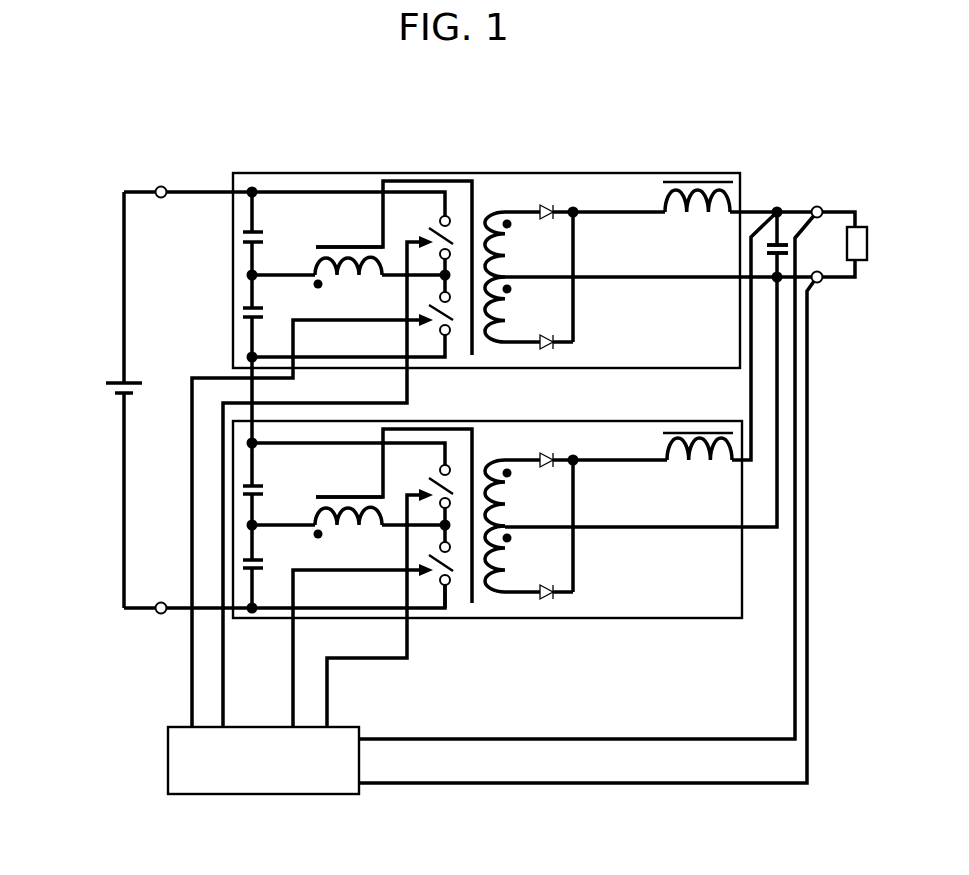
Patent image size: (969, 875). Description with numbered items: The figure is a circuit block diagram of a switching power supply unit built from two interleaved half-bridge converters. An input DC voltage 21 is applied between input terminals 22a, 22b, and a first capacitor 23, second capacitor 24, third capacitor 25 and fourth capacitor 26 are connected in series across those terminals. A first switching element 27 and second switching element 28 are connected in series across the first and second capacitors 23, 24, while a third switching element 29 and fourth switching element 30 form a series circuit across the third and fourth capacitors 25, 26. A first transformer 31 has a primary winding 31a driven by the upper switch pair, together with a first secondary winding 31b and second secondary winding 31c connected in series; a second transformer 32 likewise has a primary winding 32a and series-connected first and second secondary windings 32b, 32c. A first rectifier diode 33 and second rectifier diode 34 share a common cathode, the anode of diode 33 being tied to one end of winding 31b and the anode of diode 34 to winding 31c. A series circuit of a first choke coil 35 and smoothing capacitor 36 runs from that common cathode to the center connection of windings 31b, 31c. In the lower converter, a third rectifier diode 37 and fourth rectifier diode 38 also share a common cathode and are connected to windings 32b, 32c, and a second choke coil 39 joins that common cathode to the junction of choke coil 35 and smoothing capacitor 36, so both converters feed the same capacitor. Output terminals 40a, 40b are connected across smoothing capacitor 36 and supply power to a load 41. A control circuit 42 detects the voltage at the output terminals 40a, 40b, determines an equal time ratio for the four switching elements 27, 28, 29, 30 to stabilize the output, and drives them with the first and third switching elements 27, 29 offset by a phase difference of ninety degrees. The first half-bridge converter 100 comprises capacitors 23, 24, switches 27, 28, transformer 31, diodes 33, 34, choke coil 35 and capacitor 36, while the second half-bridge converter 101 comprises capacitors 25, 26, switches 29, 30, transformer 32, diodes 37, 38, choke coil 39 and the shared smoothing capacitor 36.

The input DC voltage 21 is at (113, 378).
The input terminal 22a is at (158, 190).
The input terminal 22b is at (158, 613).
The first capacitor 23 is at (243, 238).
The second capacitor 24 is at (243, 315).
The third capacitor 25 is at (240, 485).
The fourth capacitor 26 is at (240, 565).
The first switching element 27 is at (452, 232).
The second switching element 28 is at (453, 320).
The third switching element 29 is at (423, 482).
The fourth switching element 30 is at (452, 568).
The first transformer 31 is at (338, 248).
The primary winding 31a is at (350, 268).
The first secondary winding 31b is at (510, 243).
The second secondary winding 31c is at (515, 296).
The second transformer 32 is at (337, 497).
The primary winding 32a is at (348, 528).
The first secondary winding 32b is at (515, 486).
The second secondary winding 32c is at (515, 548).
The first rectifier diode 33 is at (548, 203).
The second rectifier diode 34 is at (557, 345).
The first choke coil 35 is at (696, 183).
The smoothing capacitor 36 is at (781, 238).
The third rectifier diode 37 is at (548, 452).
The fourth rectifier diode 38 is at (545, 602).
The second choke coil 39 is at (700, 432).
The output terminal 40a is at (820, 208).
The output terminal 40b is at (820, 280).
The load 41 is at (868, 262).
The control circuit 42 is at (168, 755).
The first half-bridge converter 100 is at (285, 172).
The second half-bridge converter 101 is at (703, 620).